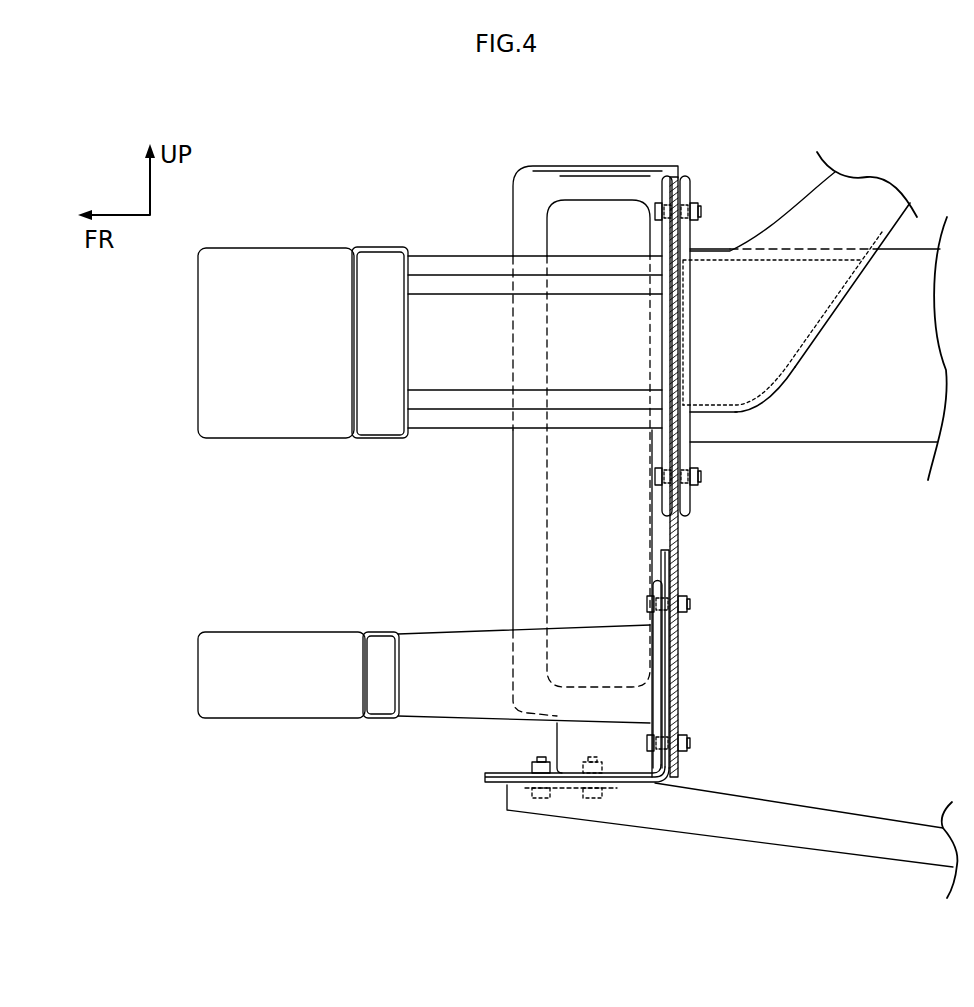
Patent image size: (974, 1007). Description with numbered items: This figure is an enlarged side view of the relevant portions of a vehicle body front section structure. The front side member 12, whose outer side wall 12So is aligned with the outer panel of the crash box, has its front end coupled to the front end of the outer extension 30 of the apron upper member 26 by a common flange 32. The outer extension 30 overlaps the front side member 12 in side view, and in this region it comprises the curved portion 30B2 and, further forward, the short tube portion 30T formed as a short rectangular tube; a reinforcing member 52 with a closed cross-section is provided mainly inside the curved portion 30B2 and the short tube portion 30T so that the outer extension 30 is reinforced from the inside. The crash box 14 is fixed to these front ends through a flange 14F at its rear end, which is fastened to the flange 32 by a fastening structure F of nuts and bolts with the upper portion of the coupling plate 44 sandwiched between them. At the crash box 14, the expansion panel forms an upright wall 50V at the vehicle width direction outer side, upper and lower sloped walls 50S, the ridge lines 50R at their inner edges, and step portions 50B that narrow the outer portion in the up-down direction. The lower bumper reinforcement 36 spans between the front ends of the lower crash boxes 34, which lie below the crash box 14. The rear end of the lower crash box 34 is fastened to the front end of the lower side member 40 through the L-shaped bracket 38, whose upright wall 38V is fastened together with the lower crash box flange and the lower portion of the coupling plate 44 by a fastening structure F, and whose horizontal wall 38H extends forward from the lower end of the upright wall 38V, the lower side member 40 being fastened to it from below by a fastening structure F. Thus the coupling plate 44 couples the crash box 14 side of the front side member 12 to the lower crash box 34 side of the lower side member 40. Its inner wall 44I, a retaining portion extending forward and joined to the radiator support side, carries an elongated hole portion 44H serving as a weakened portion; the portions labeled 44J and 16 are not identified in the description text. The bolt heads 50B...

The front side member 12 is at (823, 455).
The side wall 12So is at (888, 432).
The crash box 14 is at (449, 243).
The flange 14F is at (650, 188).
The first device (canister) 16 is at (264, 262).
The apron upper member 26 is at (803, 168).
The outer extension 30 is at (790, 186).
The curved portion 30B2 is at (790, 372).
The short tube portion 30T is at (717, 414).
The flange 32 is at (690, 172).
The lower crash box 34 is at (429, 623).
The lower bumper reinforcement 36 is at (285, 650).
The bracket 38 is at (603, 710).
The horizontal wall 38H is at (502, 785).
The upright wall 38V is at (672, 553).
The lower side member 40 is at (815, 822).
The coupling plate 44 is at (681, 150).
The hole portion 44H is at (590, 535).
The inner wall 44I is at (592, 188).
The joint portion of mounting plate 44J is at (540, 203).
The step portions 50B is at (427, 262).
The ridge lines 50R is at (433, 280).
The sloped walls 50S is at (485, 285).
The upright wall 50V is at (435, 368).
The reinforcing member 52 is at (806, 293).
The fastening structure F is at (711, 210).